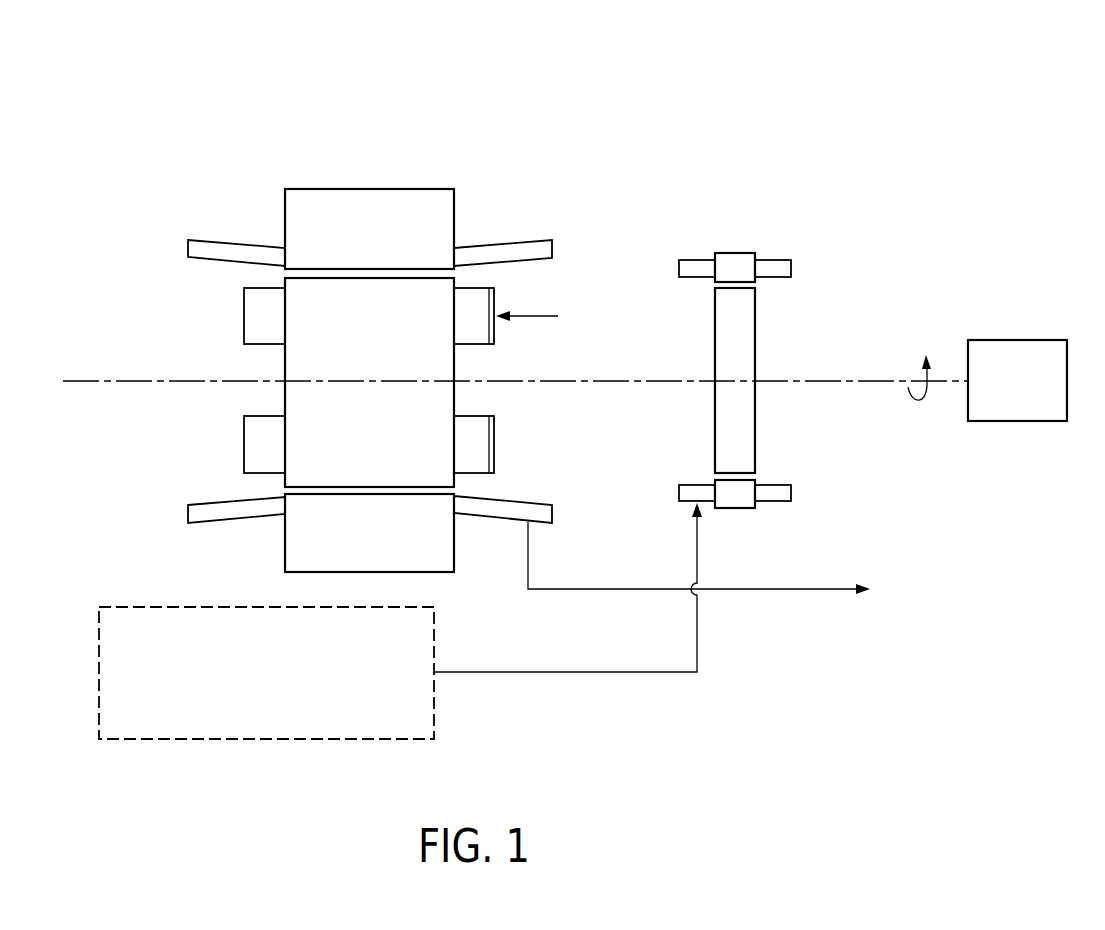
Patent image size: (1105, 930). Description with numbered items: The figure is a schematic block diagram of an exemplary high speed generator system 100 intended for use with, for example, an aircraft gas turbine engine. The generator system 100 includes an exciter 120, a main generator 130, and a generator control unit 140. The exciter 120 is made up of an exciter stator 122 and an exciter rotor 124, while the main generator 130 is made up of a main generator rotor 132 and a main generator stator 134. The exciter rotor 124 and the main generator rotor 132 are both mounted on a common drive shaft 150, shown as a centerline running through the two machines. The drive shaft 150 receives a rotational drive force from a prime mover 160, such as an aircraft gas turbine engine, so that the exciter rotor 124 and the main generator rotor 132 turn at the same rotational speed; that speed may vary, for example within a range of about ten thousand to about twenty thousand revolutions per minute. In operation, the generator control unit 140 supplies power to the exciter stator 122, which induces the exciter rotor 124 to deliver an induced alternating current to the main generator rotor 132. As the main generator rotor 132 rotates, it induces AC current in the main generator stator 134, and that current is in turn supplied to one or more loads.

The high speed generator system 100 is at (633, 177).
The exciter 120 is at (775, 311).
The exciter stator 122 is at (791, 494).
The exciter rotor 124 is at (755, 316).
The main generator 130 is at (373, 302).
The main generator rotor 132 is at (455, 377).
The main generator stator 134 is at (455, 545).
The generator control unit 140 is at (110, 606).
The common drive shaft 150 is at (850, 378).
The prime mover 160 is at (1020, 340).